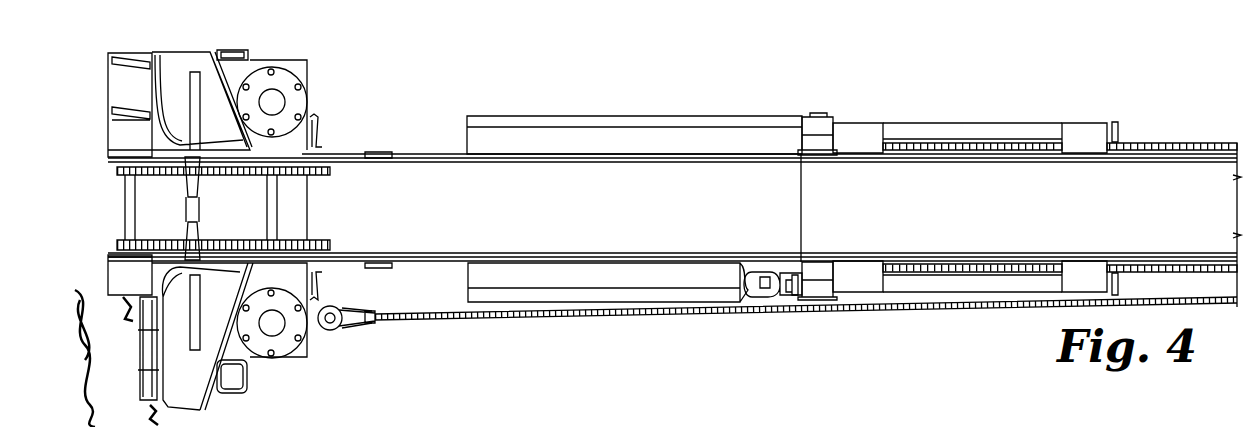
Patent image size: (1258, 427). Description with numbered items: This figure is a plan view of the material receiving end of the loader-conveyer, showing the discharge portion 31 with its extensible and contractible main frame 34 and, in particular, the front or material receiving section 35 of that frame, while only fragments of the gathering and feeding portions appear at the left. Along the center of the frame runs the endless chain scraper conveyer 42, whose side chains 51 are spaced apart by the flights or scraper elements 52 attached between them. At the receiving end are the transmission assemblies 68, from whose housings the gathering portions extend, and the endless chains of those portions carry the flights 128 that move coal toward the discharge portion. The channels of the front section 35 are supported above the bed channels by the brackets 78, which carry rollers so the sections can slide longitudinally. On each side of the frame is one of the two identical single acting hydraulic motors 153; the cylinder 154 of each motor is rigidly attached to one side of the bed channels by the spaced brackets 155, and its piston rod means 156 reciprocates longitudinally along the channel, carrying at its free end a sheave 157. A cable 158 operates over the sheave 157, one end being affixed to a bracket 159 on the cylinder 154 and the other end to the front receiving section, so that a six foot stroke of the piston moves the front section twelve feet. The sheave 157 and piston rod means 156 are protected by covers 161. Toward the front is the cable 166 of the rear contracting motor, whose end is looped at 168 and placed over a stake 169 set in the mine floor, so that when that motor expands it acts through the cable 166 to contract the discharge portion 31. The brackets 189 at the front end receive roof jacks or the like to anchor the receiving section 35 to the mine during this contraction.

The discharge portion 31 is at (1188, 142).
The main frame 34 is at (443, 153).
The front or material receiving section 35 is at (407, 273).
The endless chain scraper conveyer 42 is at (175, 205).
The side chains 51 is at (330, 243).
The flights or scraper elements 52 is at (272, 212).
The transmission assemblies 68 is at (313, 85).
The brackets 78 is at (380, 152).
The flights 128 is at (132, 112).
The hydraulic motors 153 is at (998, 132).
The cylinder 154 is at (950, 132).
The brackets 155 is at (860, 135).
The piston rod means 156 is at (795, 288).
The sheave 157 is at (762, 294).
The cable 158 is at (1140, 147).
The bracket 159 is at (820, 130).
The covers 161 is at (667, 138).
The cable 166 is at (677, 313).
The loop 168 is at (360, 322).
The stake 169 is at (333, 331).
The brackets 189 is at (240, 50).